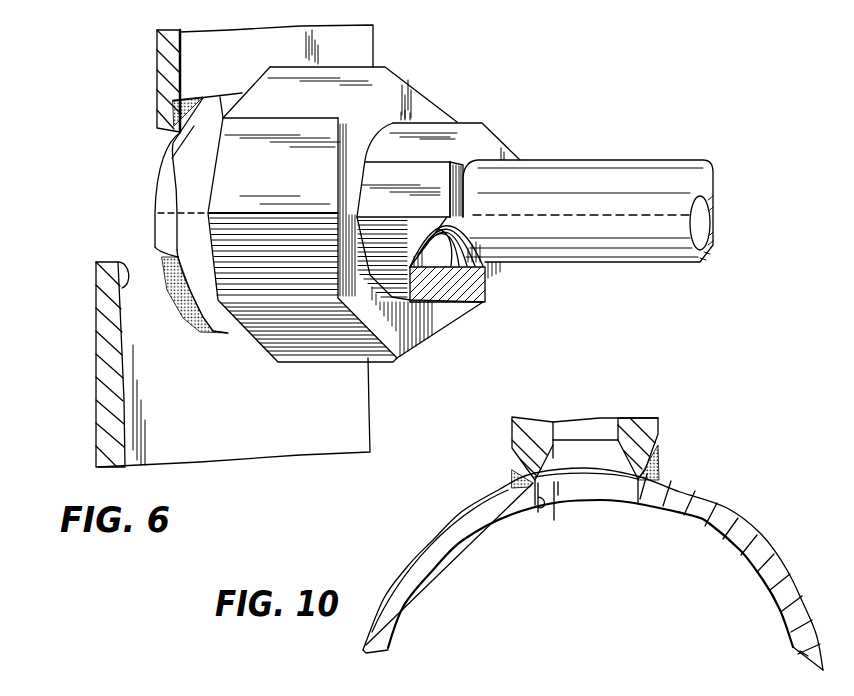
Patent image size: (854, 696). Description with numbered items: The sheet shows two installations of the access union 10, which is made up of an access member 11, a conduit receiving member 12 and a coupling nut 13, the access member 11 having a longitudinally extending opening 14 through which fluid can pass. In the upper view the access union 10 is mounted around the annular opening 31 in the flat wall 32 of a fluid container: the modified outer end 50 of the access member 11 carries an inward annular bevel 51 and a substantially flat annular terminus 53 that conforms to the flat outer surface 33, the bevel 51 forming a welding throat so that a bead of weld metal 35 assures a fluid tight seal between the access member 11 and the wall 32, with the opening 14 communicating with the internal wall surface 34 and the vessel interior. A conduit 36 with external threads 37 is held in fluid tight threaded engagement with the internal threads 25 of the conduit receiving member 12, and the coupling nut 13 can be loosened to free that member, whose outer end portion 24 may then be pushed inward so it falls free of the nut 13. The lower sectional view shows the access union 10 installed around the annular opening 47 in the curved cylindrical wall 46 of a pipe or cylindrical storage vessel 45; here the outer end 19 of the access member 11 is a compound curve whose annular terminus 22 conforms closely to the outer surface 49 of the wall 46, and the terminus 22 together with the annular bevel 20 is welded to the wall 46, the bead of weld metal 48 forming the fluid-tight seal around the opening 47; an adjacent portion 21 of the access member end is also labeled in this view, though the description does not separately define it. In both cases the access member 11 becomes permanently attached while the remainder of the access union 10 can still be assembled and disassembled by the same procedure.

In FIG. 6, the access union 10 is at (441, 79).
In FIG. 10, the access union 10 is at (572, 406).
In FIG. 6, the access member 11 is at (201, 198).
In FIG. 10, the access member 11 is at (522, 433).
In FIG. 6, the conduit receiving member 12 is at (473, 122).
In FIG. 6, the coupling nut 13 is at (290, 181).
In FIG. 10, the opening 14 is at (612, 427).
In FIG. 10, the outer end 19 is at (660, 430).
In FIG. 10, the annular bevel 20 is at (660, 472).
In FIG. 10, the flat shoulder 21 is at (555, 457).
In FIG. 10, the annular terminus 22 is at (600, 467).
In FIG. 6, the outer end portion 24 is at (487, 303).
In FIG. 6, the internal threads 25 is at (450, 303).
In FIG. 6, the annular opening 31 is at (163, 132).
In FIG. 6, the flat wall 32 is at (330, 420).
In FIG. 6, the outer surface 33 is at (122, 280).
In FIG. 6, the internal wall surface 34 is at (97, 366).
In FIG. 6, the bead of weld metal 35 is at (172, 128).
In FIG. 6, the conduit 36 is at (670, 160).
In FIG. 6, the external threads 37 is at (470, 245).
In FIG. 10, the pipe or cylindrical storage vessel 45 is at (455, 520).
In FIG. 10, the cylindrical wall 46 is at (707, 530).
In FIG. 10, the annular opening 47 is at (537, 512).
In FIG. 10, the bead of weld metal 48 is at (513, 485).
In FIG. 10, the outer surface 49 is at (558, 495).
In FIG. 6, the modified outer end 50 is at (188, 245).
In FIG. 6, the annular bevel 51 is at (163, 193).
In FIG. 6, the annular terminus 53 is at (155, 246).